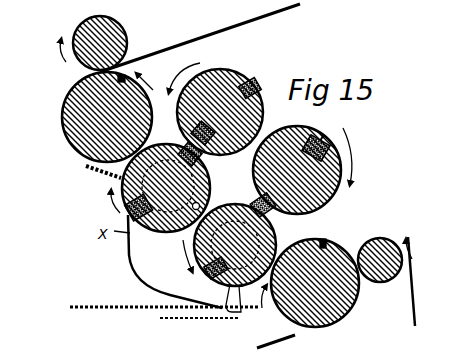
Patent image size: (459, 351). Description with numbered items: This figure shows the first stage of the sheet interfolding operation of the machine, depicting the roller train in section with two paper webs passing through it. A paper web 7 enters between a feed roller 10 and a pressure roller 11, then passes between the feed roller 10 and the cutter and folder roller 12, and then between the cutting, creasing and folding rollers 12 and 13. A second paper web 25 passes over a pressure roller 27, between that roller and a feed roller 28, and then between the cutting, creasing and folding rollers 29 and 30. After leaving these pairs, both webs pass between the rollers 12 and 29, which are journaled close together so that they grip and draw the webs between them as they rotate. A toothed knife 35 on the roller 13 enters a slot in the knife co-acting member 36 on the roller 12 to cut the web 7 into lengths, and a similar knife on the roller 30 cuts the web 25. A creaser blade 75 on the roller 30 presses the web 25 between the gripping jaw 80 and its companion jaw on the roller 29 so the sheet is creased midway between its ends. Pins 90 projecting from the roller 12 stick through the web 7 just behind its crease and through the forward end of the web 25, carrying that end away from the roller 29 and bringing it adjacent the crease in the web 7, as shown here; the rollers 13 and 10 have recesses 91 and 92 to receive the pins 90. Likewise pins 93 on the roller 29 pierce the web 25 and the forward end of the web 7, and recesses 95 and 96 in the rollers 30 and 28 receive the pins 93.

The paper web 7 is at (223, 28).
The feed roller 10 is at (107, 117).
The pressure roller 11 is at (100, 43).
The cutter and folder roller 12 is at (148, 187).
The cutting, creasing and folding roller 13 is at (220, 112).
The paper web 25 is at (410, 316).
The pressure roller 27 is at (380, 260).
The feed roller 28 is at (315, 283).
The cutting, creasing and folding roller 29 is at (235, 258).
The cutting, creasing and folding roller 30 is at (295, 171).
The toothed knife 35 is at (190, 131).
The knife co-acting member 36 is at (214, 170).
The creaser blade 75 is at (300, 202).
The gripping jaw 80 is at (247, 194).
The pins 90 is at (145, 226).
The recess 91 is at (253, 95).
The recess 92 is at (123, 77).
The pins 93 is at (272, 212).
The recess 95 is at (283, 215).
The recess 96 is at (327, 243).